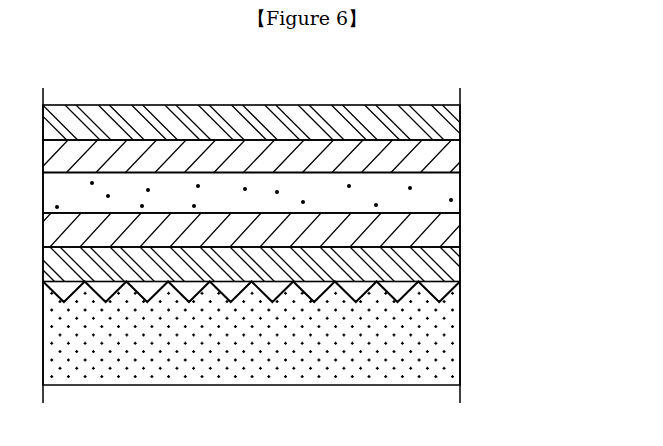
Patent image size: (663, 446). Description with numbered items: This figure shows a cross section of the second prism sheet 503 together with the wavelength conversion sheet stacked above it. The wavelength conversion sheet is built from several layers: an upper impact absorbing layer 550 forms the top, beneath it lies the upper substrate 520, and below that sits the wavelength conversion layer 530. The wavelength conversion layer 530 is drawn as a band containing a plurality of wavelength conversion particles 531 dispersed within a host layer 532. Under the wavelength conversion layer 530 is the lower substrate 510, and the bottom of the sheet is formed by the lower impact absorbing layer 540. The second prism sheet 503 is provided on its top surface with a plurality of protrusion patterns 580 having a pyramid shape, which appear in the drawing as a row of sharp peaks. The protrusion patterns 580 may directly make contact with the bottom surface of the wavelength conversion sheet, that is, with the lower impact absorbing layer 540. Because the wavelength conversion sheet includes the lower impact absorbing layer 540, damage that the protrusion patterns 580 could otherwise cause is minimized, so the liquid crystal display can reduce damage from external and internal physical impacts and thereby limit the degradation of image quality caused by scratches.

The upper impact absorbing layer 550 is at (460, 119).
The upper substrate 520 is at (460, 154).
The wavelength conversion layer 530 is at (300, 195).
The wavelength conversion particles 531 is at (453, 201).
The host layer 532 is at (457, 189).
The lower substrate 510 is at (460, 231).
The lower impact absorbing layer 540 is at (460, 260).
The protrusion patterns 580 is at (440, 299).
The second prism sheet 503 is at (460, 362).